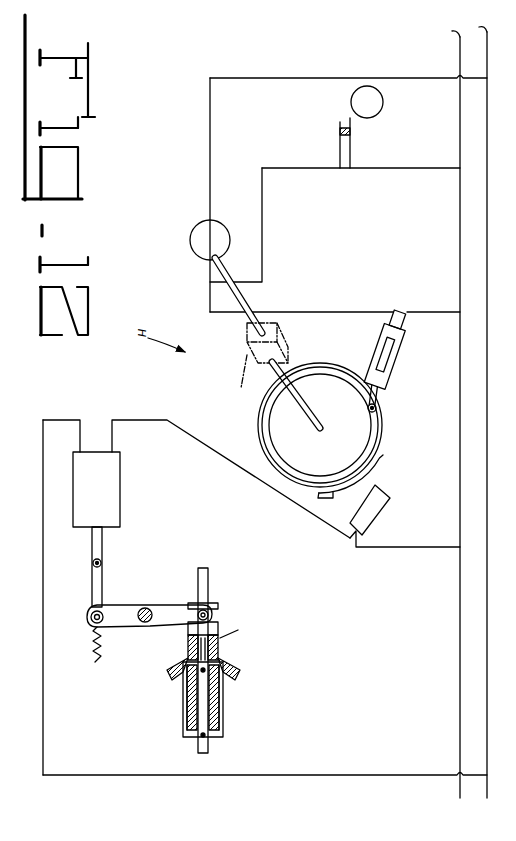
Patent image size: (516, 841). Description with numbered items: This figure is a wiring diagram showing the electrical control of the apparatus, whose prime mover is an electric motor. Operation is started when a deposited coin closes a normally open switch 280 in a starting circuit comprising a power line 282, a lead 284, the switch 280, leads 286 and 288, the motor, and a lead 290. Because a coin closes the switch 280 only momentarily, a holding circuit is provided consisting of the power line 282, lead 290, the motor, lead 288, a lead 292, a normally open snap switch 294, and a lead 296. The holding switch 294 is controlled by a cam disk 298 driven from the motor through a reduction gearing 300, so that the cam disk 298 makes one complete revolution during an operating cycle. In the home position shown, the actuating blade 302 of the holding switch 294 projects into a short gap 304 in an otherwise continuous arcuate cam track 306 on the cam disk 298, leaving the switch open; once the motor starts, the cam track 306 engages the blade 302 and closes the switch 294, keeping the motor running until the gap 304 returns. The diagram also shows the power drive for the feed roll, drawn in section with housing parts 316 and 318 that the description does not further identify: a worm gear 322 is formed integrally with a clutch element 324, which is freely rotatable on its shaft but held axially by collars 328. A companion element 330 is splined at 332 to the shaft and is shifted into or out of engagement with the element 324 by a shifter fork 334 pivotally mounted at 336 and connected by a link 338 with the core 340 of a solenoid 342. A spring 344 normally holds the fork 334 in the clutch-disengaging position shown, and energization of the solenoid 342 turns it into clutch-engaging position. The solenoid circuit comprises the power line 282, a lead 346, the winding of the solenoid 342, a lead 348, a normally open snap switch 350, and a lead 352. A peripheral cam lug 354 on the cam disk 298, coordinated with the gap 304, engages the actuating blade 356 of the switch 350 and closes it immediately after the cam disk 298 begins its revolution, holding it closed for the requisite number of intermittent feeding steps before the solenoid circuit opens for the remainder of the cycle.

The switch 280 is at (342, 118).
The power line 282 is at (462, 34).
The lead 284 is at (398, 170).
The lead 286 is at (262, 172).
The lead 288 is at (210, 272).
The lead 290 is at (212, 91).
The lead 292 is at (227, 313).
The snap switch 294 is at (400, 372).
The lead 296 is at (424, 313).
The cam disk 298 is at (386, 430).
The reduction gearing 300 is at (246, 383).
The actuating blade 302 is at (377, 409).
The gap 304 is at (378, 413).
The cam track 306 is at (342, 381).
The valve body 316 is at (193, 703).
The valve housing 318 is at (170, 678).
The worm gear 322 is at (224, 702).
The clutch element 324 is at (232, 686).
The collars 328 is at (210, 737).
The companion element 330 is at (223, 668).
The spline 332 is at (188, 634).
The shifter fork 334 is at (168, 626).
The pivot 336 is at (146, 608).
The link 338 is at (92, 588).
The core 340 is at (92, 546).
The solenoid 342 is at (75, 495).
The spring 344 is at (91, 647).
The lead 346 is at (42, 586).
The lead 348 is at (258, 479).
The snap switch 350 is at (380, 512).
The lead 352 is at (408, 548).
The cam lug 354 is at (346, 490).
The actuating blade 356 is at (377, 472).